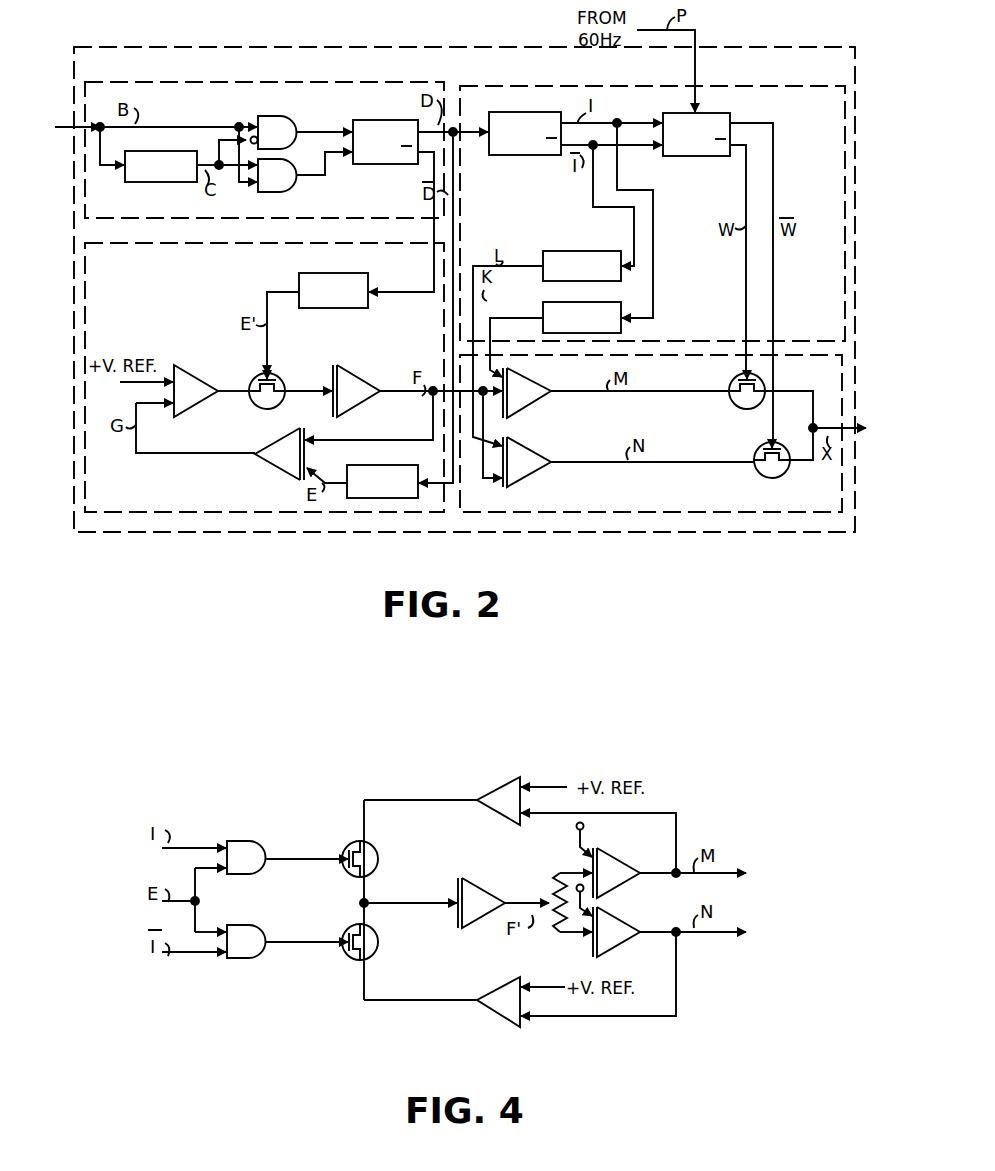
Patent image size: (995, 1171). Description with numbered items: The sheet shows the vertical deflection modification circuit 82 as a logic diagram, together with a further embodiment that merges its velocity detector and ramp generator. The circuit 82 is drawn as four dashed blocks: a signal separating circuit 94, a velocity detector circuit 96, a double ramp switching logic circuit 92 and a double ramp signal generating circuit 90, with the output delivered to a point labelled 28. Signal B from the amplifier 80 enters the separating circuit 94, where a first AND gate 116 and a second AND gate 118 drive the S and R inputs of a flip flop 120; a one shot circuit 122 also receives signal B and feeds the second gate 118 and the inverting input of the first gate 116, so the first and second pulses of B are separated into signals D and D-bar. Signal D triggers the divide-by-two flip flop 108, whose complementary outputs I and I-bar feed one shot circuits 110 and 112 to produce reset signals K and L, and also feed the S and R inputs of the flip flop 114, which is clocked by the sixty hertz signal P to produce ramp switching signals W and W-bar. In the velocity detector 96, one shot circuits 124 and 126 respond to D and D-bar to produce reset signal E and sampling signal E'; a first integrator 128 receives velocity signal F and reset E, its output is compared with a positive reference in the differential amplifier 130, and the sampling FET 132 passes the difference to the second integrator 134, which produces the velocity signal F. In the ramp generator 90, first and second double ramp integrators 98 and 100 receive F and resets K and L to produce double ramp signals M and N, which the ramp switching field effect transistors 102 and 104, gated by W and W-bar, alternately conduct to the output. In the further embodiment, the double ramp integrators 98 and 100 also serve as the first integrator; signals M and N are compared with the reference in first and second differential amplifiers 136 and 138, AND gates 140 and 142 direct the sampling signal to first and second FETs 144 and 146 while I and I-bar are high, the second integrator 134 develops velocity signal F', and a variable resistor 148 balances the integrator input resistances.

In FIG. 2, the output destination 28 is at (853, 430).
In FIG. 2, the amplifier 80 is at (59, 124).
In FIG. 2, the vertical deflection modification circuit 82 is at (208, 534).
In FIG. 2, the double ramp signal generating circuit 90 is at (694, 516).
In FIG. 2, the double ramp switching logic circuit 92 is at (553, 86).
In FIG. 2, the signal separating circuit 94 is at (333, 84).
In FIG. 2, the velocity detector circuit 96 is at (263, 515).
In FIG. 2, the first double ramp integrator 98 is at (530, 392).
In FIG. 4, the first double ramp integrator 98 is at (606, 864).
In FIG. 2, the second double ramp integrator 100 is at (530, 455).
In FIG. 4, the second double ramp integrator 100 is at (604, 922).
In FIG. 2, the first ramp switching field effect transistor 102 is at (738, 378).
In FIG. 2, the second ramp switching field effect transistor 104 is at (758, 448).
In FIG. 2, the divide-by-two flip flop 108 is at (540, 152).
In FIG. 2, the one shot circuit 110 is at (548, 306).
In FIG. 2, the one shot circuit 112 is at (552, 252).
In FIG. 2, the flip flop 114 is at (690, 151).
In FIG. 2, the first AND gate 116 is at (272, 117).
In FIG. 2, the second AND gate 118 is at (284, 180).
In FIG. 2, the flip flop 120 is at (362, 165).
In FIG. 2, the one shot circuit 122 is at (145, 183).
In FIG. 2, the one shot circuit 124 is at (385, 500).
In FIG. 2, the one shot circuit 126 is at (346, 303).
In FIG. 2, the first integrator 128 is at (268, 460).
In FIG. 2, the differential amplifier 130 is at (196, 385).
In FIG. 2, the sampling FET 132 is at (273, 375).
In FIG. 2, the second integrator 134 is at (358, 380).
In FIG. 4, the second integrator 134 is at (490, 865).
In FIG. 4, the first differential amplifier 136 is at (494, 790).
In FIG. 4, the second differential amplifier 138 is at (500, 995).
In FIG. 4, the AND gate 140 is at (236, 842).
In FIG. 4, the AND gate 142 is at (250, 936).
In FIG. 4, the first FET 144 is at (368, 852).
In FIG. 4, the second FET 146 is at (372, 945).
In FIG. 4, the variable resistor 148 is at (552, 890).